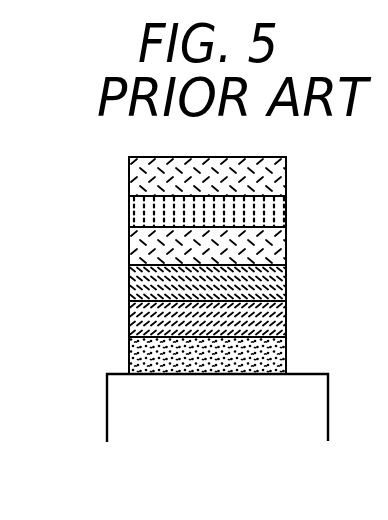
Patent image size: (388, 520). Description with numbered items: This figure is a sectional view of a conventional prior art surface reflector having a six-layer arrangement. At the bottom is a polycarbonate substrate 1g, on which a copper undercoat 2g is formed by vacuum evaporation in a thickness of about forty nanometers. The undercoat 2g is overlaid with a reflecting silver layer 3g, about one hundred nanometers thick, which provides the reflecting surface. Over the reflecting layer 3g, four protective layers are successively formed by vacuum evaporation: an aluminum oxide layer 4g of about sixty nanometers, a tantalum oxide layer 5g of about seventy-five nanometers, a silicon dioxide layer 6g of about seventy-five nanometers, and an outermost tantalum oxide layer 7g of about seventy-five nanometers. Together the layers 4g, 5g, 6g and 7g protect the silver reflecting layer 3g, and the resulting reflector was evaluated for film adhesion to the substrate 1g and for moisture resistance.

The substrate 1g is at (118, 422).
The copper undercoat 2g is at (129, 363).
The reflecting silver layer 3g is at (129, 328).
The aluminum oxide layer 4g is at (129, 290).
The tantalum oxide layer 5g is at (129, 260).
The silicon dioxide layer 6g is at (129, 222).
The tantalum oxide layer 7g is at (129, 183).